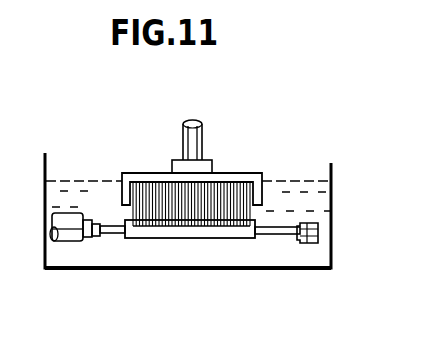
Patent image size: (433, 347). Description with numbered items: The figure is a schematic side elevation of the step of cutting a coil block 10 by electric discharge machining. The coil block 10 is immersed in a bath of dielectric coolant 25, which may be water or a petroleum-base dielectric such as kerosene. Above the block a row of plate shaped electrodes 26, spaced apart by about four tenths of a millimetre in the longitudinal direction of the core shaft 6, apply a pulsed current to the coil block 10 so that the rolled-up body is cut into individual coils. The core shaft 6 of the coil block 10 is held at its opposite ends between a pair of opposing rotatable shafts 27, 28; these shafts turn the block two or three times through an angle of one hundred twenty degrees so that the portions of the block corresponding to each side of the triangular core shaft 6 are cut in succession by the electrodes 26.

The core shaft 6 is at (108, 238).
The coil block 10 is at (219, 239).
The dielectric coolant 25 is at (296, 192).
The plate shaped electrodes 26 is at (130, 211).
The rotatable shaft 27 is at (66, 244).
The rotatable shaft 28 is at (307, 245).